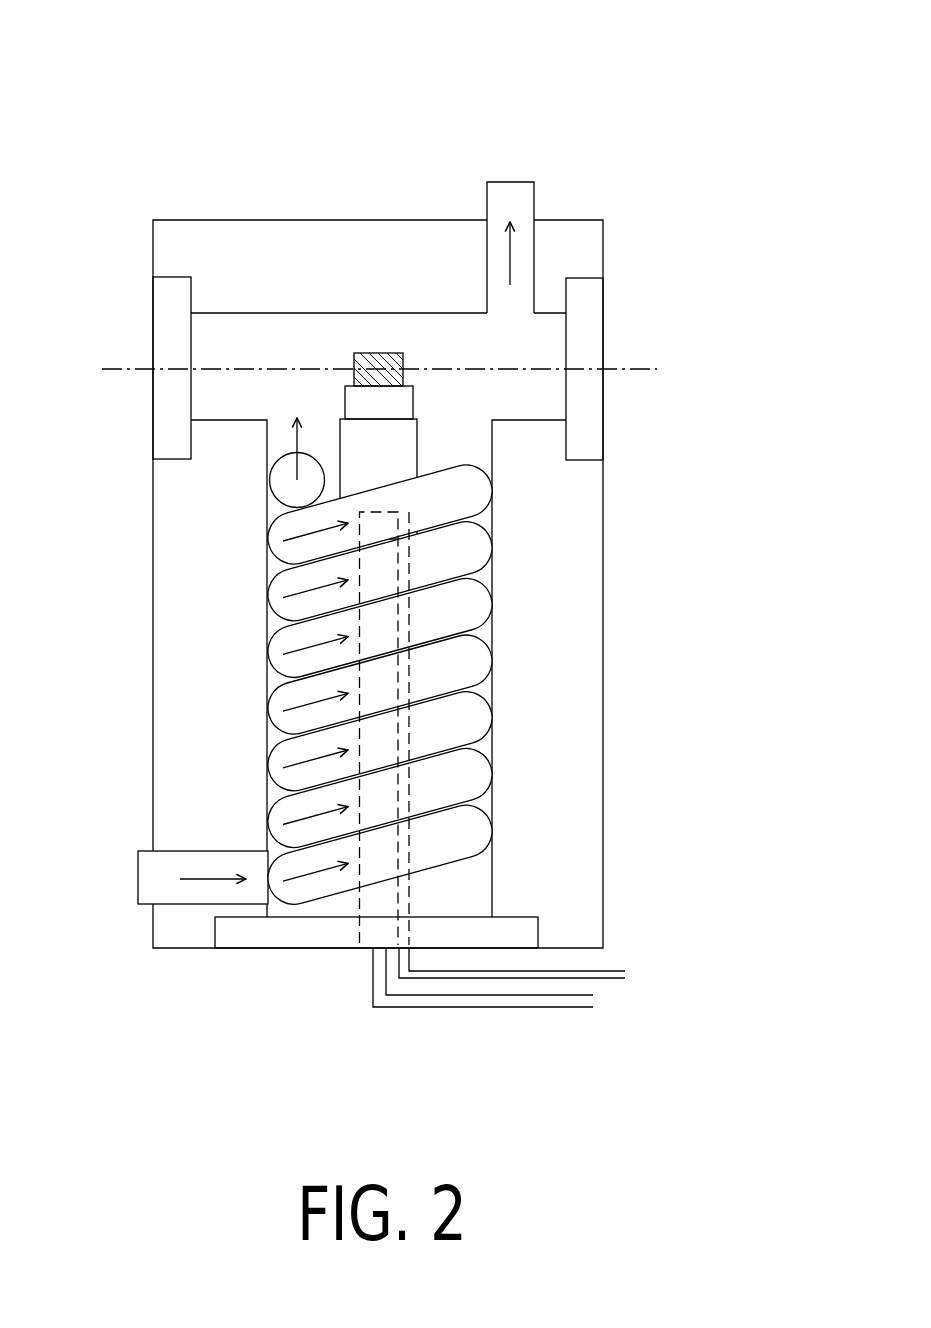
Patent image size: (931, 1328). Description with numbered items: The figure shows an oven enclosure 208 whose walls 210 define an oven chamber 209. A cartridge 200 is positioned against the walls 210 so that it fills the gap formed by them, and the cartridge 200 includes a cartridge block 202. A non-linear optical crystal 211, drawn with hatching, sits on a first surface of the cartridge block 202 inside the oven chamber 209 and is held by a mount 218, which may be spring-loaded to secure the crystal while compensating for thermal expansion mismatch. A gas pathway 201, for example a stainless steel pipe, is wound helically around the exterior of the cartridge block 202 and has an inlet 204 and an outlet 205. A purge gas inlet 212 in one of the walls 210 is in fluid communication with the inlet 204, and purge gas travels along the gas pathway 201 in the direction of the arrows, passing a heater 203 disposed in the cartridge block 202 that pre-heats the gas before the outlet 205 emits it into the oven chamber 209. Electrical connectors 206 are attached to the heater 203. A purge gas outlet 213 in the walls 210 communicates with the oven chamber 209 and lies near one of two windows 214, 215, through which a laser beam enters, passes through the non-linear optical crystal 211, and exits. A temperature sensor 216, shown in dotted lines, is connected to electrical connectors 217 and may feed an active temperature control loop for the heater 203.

The cartridge 200 is at (538, 930).
The gas pathway 201 is at (470, 462).
The cartridge block 202 is at (310, 950).
The heater 203 is at (358, 930).
The inlet 204 is at (275, 905).
The outlet 205 is at (272, 462).
The electrical connectors 206 is at (562, 1008).
The oven enclosure 208 is at (584, 129).
The oven chamber 209 is at (253, 328).
The walls 210 is at (580, 673).
The non-linear optical crystal 211 is at (378, 353).
The purge gas inlet 212 is at (142, 851).
The purge gas outlet 213 is at (487, 197).
The window 214 is at (153, 330).
The window 215 is at (603, 323).
The temperature sensor 216 is at (408, 873).
The electrical connectors 217 is at (613, 980).
The mount 218 is at (413, 400).